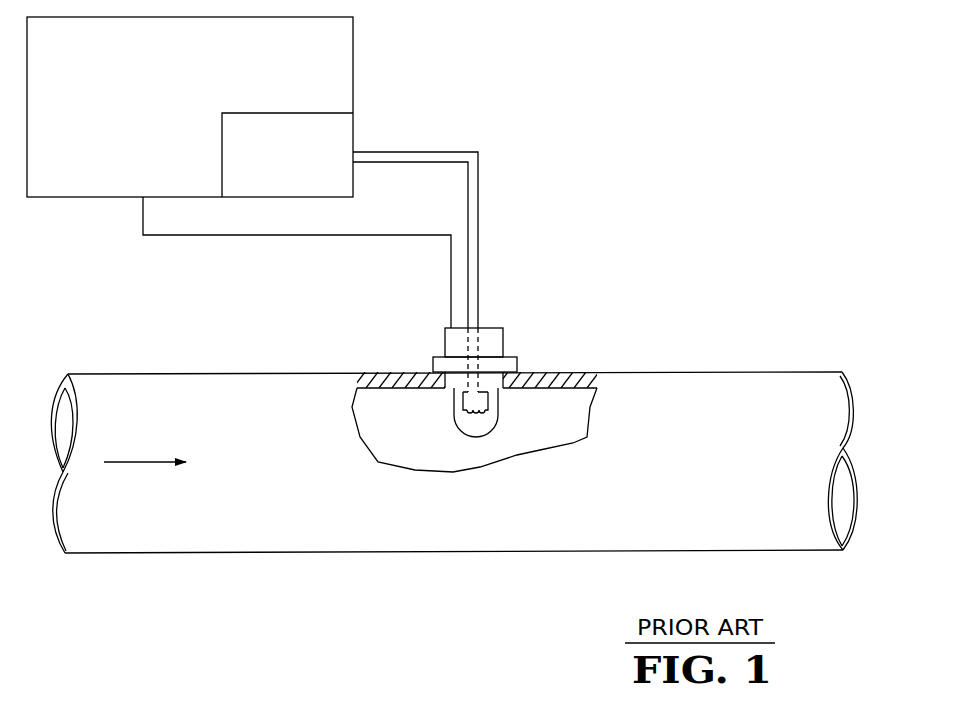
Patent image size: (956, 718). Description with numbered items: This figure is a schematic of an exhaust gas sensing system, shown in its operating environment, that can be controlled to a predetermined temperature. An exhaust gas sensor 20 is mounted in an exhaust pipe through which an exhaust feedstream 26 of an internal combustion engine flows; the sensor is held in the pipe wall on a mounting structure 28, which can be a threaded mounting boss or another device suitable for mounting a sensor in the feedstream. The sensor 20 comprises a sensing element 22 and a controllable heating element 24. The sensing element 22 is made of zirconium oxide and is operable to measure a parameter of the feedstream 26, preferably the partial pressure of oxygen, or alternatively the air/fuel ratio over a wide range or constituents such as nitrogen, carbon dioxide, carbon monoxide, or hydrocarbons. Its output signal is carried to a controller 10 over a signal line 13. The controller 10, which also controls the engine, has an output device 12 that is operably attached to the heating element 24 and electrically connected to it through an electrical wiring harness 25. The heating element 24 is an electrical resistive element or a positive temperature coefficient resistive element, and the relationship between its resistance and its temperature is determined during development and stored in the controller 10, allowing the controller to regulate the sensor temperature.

The controller 10 is at (80, 78).
The output device 12 is at (345, 132).
The signal line 13 is at (270, 237).
The exhaust gas sensor 20 is at (410, 359).
The sensing element 22 is at (455, 423).
The controllable heating element 24 is at (485, 412).
The electrical wiring harness 25 is at (478, 208).
The exhaust feedstream 26 is at (155, 462).
The mounting structure 28 is at (518, 358).